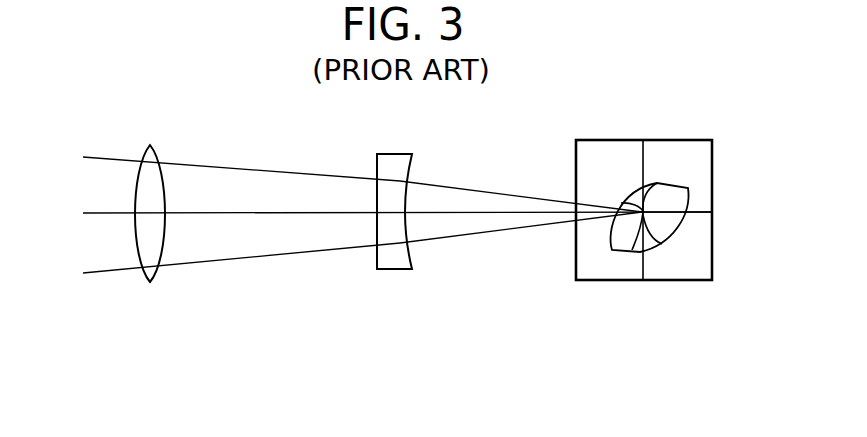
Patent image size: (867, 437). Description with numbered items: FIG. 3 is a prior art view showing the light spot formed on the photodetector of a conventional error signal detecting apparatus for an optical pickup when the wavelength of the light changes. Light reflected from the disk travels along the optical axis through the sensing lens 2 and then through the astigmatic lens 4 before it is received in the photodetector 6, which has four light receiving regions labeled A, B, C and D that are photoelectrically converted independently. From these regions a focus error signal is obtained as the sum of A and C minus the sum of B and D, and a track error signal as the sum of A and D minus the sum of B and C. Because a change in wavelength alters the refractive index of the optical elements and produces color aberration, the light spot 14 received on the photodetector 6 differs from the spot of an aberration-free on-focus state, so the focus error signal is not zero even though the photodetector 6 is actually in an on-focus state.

The sensing lens 2 is at (150, 282).
The astigmatic lens 4 is at (392, 269).
The photodetector 6 is at (643, 280).
The light spot 14 is at (680, 226).